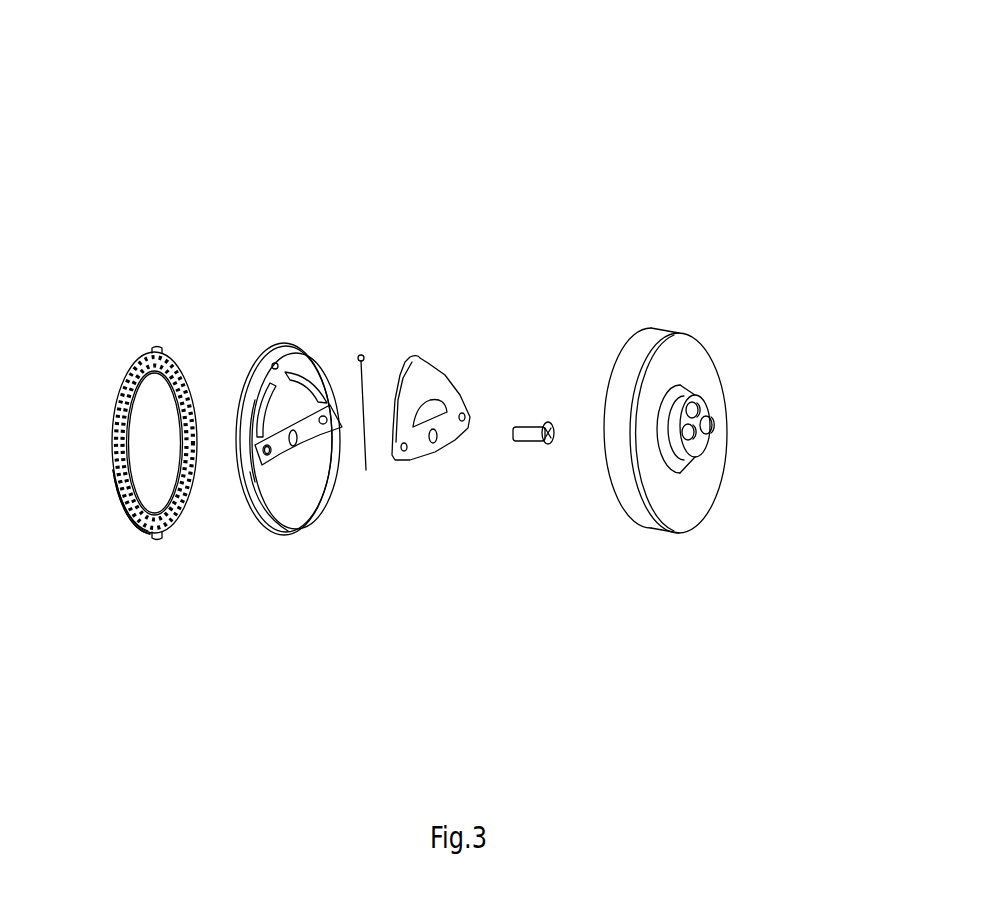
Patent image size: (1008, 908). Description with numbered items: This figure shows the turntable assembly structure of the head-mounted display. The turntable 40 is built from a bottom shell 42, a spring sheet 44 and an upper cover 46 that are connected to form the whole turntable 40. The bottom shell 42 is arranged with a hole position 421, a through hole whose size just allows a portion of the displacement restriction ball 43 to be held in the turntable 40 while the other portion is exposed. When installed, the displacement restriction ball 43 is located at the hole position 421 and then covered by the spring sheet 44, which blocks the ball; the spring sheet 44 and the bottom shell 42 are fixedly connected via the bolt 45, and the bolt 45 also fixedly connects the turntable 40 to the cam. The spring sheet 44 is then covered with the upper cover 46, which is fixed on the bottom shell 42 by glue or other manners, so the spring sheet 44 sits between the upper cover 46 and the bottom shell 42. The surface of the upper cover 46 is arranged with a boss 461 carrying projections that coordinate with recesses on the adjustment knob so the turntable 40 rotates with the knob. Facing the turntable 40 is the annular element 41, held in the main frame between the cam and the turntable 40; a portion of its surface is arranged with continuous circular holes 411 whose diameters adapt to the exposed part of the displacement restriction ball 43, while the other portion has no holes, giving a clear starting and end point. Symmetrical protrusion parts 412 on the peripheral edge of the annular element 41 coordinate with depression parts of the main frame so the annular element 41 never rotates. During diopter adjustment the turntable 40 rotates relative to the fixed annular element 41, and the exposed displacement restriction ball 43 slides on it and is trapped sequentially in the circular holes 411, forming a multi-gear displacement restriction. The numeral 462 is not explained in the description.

The turntable 40 is at (433, 122).
The annular element 41 is at (150, 468).
The circular holes 411 is at (122, 372).
The protrusion parts 412 is at (156, 348).
The bottom shell 42 is at (305, 493).
The hole position 421 is at (272, 364).
The displacement restriction ball 43 is at (366, 470).
The spring sheet 44 is at (424, 450).
The bolt 45 is at (535, 442).
The upper cover 46 is at (633, 530).
The boss 461 is at (689, 402).
The second boss 462 is at (712, 427).